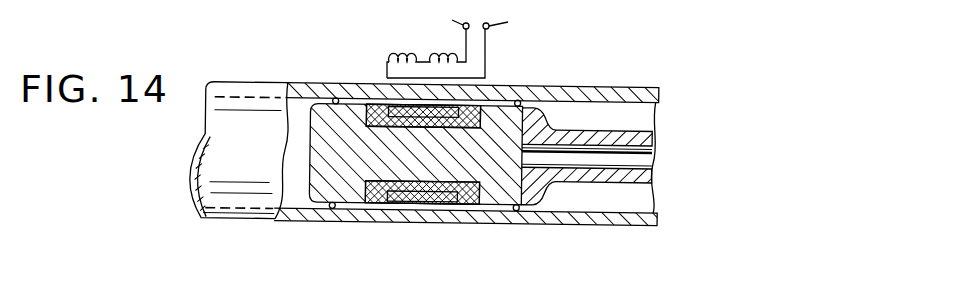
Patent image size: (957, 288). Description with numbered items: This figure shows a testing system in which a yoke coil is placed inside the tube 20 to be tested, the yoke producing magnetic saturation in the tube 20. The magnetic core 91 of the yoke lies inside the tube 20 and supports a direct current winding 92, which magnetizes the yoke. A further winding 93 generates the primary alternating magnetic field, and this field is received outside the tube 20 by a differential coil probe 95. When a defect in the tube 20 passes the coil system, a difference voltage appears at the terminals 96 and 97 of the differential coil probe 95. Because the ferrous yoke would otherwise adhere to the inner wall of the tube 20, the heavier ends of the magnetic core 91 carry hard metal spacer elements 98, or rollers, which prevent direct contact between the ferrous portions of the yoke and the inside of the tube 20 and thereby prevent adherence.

The tube 20 is at (571, 222).
The magnetic core 91 is at (320, 190).
The direct current winding 92 is at (378, 199).
The winding 93 is at (421, 199).
The differential coil probe 95 is at (411, 56).
The terminal 96 is at (444, 22).
The terminal 97 is at (513, 25).
The hard metal spacer elements 98 is at (527, 88).